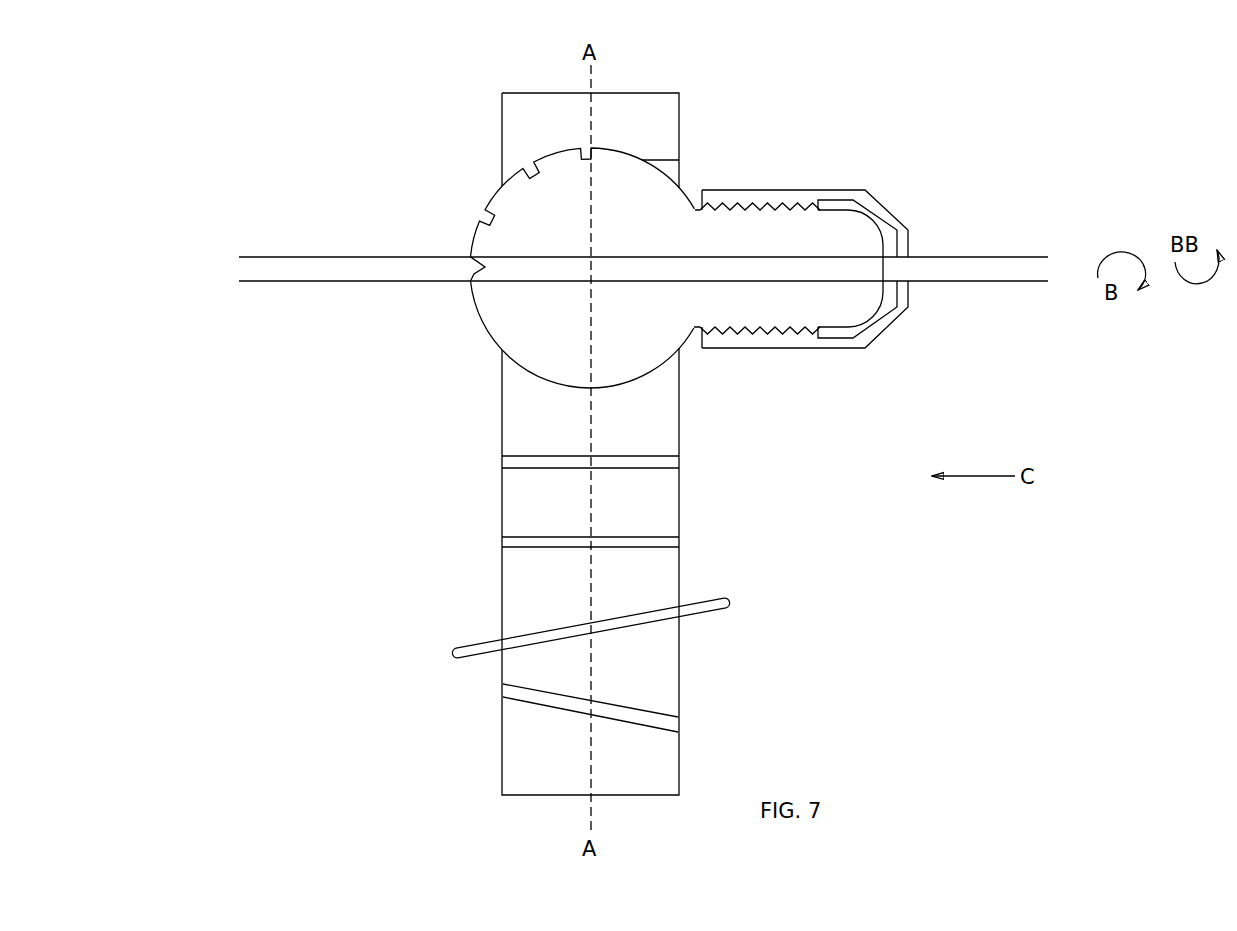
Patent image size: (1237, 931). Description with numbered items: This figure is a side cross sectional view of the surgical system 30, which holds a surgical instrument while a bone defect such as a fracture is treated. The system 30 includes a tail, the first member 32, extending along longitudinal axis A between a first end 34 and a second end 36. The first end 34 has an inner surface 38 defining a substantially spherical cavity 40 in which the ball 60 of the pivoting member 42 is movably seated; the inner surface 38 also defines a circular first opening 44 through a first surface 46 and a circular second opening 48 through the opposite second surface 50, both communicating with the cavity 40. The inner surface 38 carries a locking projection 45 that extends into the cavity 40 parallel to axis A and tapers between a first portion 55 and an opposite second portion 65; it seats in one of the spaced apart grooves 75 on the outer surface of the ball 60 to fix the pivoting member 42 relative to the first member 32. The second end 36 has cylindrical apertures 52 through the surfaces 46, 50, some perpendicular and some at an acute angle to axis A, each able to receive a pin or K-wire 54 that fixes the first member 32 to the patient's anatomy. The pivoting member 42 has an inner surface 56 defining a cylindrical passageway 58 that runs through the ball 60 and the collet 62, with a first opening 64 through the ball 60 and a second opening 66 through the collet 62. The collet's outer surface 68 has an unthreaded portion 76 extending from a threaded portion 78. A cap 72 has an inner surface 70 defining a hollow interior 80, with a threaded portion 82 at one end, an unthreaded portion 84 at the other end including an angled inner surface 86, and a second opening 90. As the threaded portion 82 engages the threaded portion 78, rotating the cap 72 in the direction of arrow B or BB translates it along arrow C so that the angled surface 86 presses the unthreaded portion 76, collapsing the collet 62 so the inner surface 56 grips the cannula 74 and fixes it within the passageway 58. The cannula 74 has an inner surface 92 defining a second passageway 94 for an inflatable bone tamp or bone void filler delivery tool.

The surgical system 30 is at (886, 623).
The first member 32 is at (432, 572).
The first end 34 is at (502, 92).
The second end 36 is at (533, 783).
The inner surface 38 is at (684, 373).
The spherical cavity 40 is at (700, 355).
The pivoting member 42 is at (390, 181).
The first opening 44 is at (690, 156).
The projection 45 is at (594, 152).
The first surface 46 is at (679, 655).
The second opening 48 is at (500, 352).
The second surface 50 is at (502, 440).
The cylindrical aperture 52 is at (500, 537).
The pin or K-wire 54 is at (720, 600).
The first portion 55 is at (592, 148).
The inner surface 56 is at (750, 257).
The passageway 58 is at (823, 257).
The ball 60 is at (497, 320).
The collet 62 is at (897, 312).
The first opening 64 is at (470, 282).
The second portion 65 is at (574, 150).
The second opening 66 is at (897, 240).
The outer surface of collet 68 is at (833, 336).
The inner surface of cap 70 is at (755, 330).
The cap 72 is at (895, 368).
The cannula 74 is at (305, 253).
The grooves 75 is at (603, 170).
The unthreaded portion 76 is at (822, 341).
The threaded portion 78 is at (798, 332).
The hollow interior 80 is at (852, 203).
The threaded portion 82 is at (784, 188).
The unthreaded portion 84 is at (865, 350).
The angled inner surface 86 is at (882, 345).
The second opening 90 is at (925, 288).
The inner surface of cannula 92 is at (240, 259).
The second passageway 94 is at (410, 268).